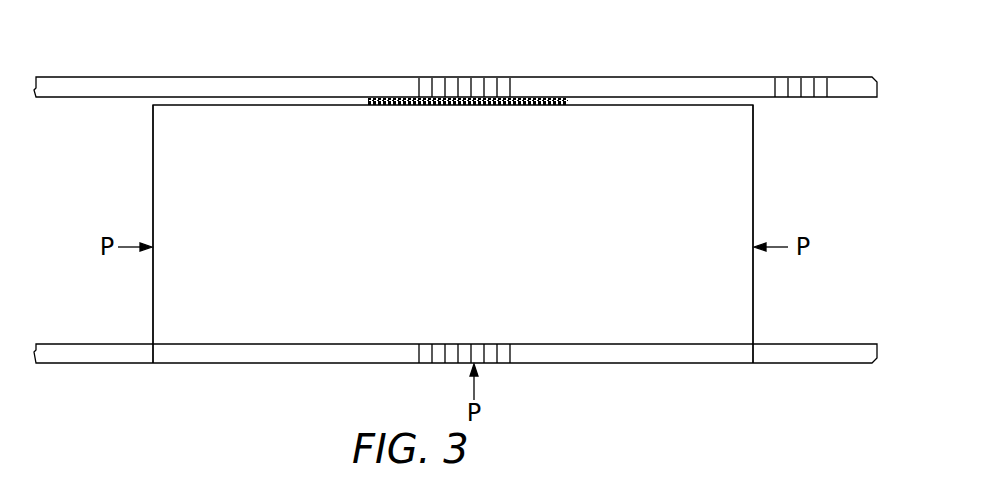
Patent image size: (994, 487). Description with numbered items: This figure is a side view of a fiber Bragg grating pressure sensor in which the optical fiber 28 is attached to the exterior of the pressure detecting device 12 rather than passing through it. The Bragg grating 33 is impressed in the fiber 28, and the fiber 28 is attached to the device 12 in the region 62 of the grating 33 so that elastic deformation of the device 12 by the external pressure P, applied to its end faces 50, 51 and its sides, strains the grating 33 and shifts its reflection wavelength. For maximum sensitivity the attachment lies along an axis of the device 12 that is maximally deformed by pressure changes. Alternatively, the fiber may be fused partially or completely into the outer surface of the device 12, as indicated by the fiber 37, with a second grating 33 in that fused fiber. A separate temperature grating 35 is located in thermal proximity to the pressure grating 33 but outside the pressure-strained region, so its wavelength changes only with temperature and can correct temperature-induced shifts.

The pressure detecting device 12 is at (472, 224).
The optical fiber 28 is at (851, 85).
The Bragg grating 33 is at (403, 108).
The temperature grating 35 is at (766, 108).
The fiber 37 is at (851, 355).
The end face 50 is at (152, 127).
The end face 51 is at (754, 333).
The region of the grating 62 is at (378, 110).